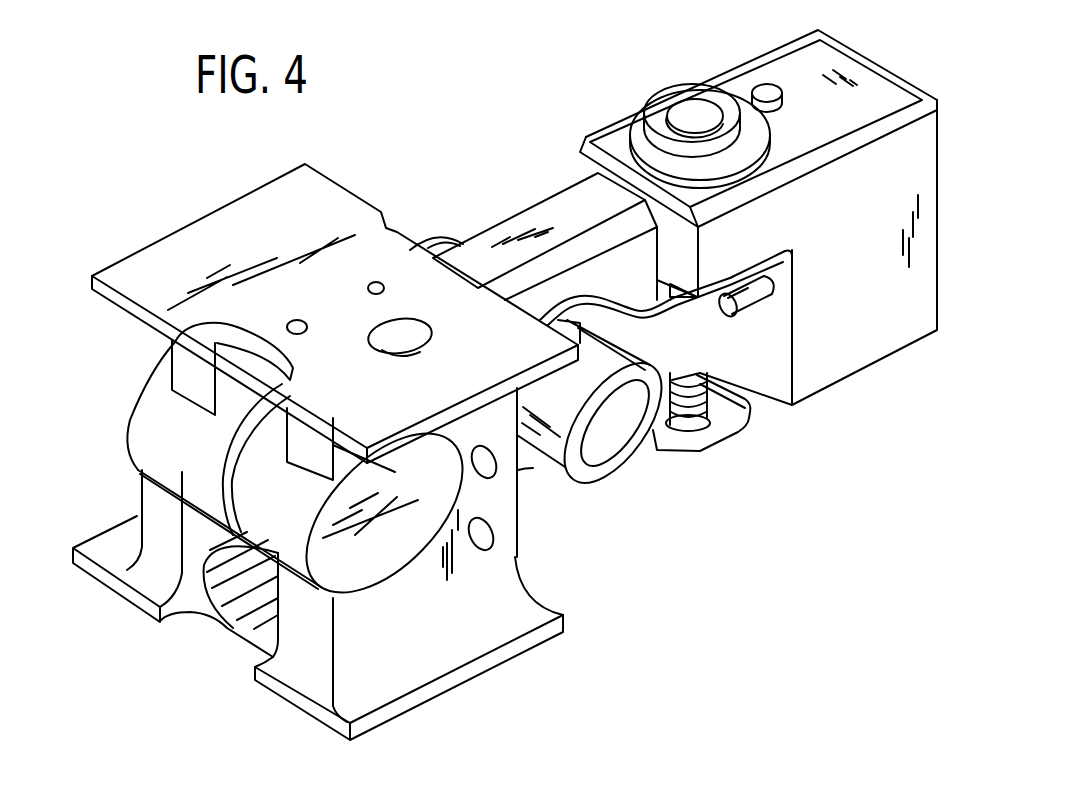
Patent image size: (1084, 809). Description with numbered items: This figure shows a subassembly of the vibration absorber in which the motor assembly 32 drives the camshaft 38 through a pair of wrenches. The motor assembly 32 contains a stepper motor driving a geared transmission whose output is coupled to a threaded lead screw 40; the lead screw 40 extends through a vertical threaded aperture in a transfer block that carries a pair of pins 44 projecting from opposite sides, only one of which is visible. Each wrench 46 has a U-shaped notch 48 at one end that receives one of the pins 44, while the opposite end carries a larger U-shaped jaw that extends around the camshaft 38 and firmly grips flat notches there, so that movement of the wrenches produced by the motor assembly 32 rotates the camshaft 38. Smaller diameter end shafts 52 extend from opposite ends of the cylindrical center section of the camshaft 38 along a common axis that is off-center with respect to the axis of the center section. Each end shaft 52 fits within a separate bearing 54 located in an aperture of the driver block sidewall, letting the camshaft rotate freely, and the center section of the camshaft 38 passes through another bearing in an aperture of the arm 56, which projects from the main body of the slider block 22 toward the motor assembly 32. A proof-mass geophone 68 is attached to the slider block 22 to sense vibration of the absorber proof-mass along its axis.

The slider block 22 is at (183, 243).
The motor assembly 32 is at (782, 58).
The camshaft 38 is at (603, 427).
The threaded lead screw 40 is at (693, 390).
The pins 44 is at (743, 308).
The wrench 46 is at (720, 337).
The U-shaped notch 48 is at (775, 258).
The end shafts 52 is at (628, 423).
The bearing 54 is at (428, 243).
The arm 56 is at (573, 200).
The proof-mass geophone 68 is at (148, 406).